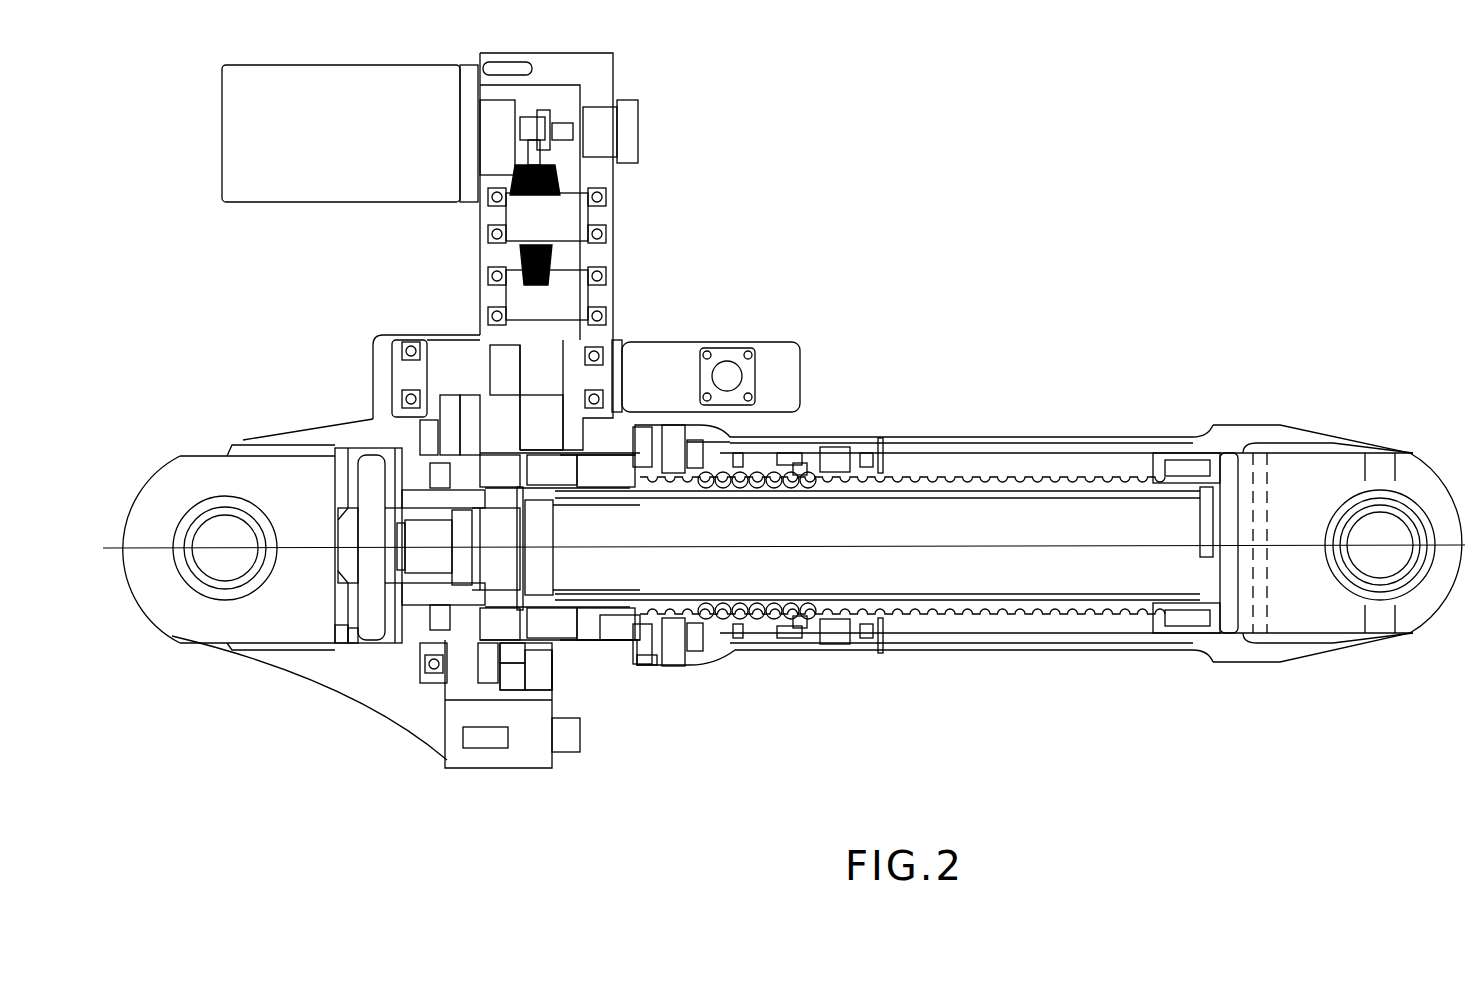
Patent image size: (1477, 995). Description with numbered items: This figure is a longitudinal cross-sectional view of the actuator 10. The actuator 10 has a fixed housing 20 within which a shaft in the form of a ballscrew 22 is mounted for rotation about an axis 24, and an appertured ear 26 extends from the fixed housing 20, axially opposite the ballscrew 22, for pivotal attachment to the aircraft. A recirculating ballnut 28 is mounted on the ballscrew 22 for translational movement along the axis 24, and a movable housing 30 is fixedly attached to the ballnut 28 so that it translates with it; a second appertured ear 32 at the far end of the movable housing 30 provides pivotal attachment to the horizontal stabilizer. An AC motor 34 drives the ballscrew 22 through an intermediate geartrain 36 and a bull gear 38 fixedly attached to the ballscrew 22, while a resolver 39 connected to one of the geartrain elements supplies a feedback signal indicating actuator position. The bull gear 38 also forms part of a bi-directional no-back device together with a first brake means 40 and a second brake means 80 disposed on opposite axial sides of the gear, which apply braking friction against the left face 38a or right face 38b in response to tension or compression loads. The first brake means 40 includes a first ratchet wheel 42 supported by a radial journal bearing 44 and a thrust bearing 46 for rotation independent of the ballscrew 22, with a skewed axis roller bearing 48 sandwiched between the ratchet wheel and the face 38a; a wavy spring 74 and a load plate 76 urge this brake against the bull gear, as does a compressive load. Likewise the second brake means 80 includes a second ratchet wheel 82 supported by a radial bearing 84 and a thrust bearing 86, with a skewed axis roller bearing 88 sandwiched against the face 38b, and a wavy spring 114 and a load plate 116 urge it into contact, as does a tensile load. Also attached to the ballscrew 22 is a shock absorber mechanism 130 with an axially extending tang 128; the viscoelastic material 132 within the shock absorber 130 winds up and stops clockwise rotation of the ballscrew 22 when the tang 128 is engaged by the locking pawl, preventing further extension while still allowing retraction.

The actuator 10 is at (947, 340).
The fixed housing 20 is at (263, 657).
The ballscrew 22 is at (1008, 607).
The axis 24 is at (1137, 545).
The appertured ear 26 is at (162, 628).
The recirculating ballnut 28 is at (768, 632).
The movable housing 30 is at (1125, 432).
The second appertured ear 32 is at (1413, 447).
The AC motor 34 is at (366, 64).
The intermediate geartrain 36 is at (477, 600).
The bull gear 38 is at (470, 540).
The left face of the bull gear 38a is at (417, 675).
The right face of the bull gear 38b is at (518, 690).
The resolver 39 is at (770, 342).
The first brake means 40 is at (438, 378).
The first ratchet wheel 42 is at (430, 433).
The radial journal bearing 44 is at (427, 463).
The thrust bearing 46 is at (433, 440).
The skewed axis roller bearing 48 is at (442, 427).
The wavy spring 74 is at (377, 660).
The load plate 76 is at (330, 653).
The second brake means 80 is at (505, 395).
The second ratchet wheel 82 is at (525, 650).
The radial bearing 84 is at (493, 622).
The thrust bearing 86 is at (550, 668).
The skewed axis roller bearing 88 is at (520, 655).
The wavy spring 114 is at (493, 405).
The load plate 116 is at (547, 440).
The tang 128 is at (622, 633).
The shock absorber mechanism 130 is at (687, 663).
The viscoelastic material 132 is at (637, 663).